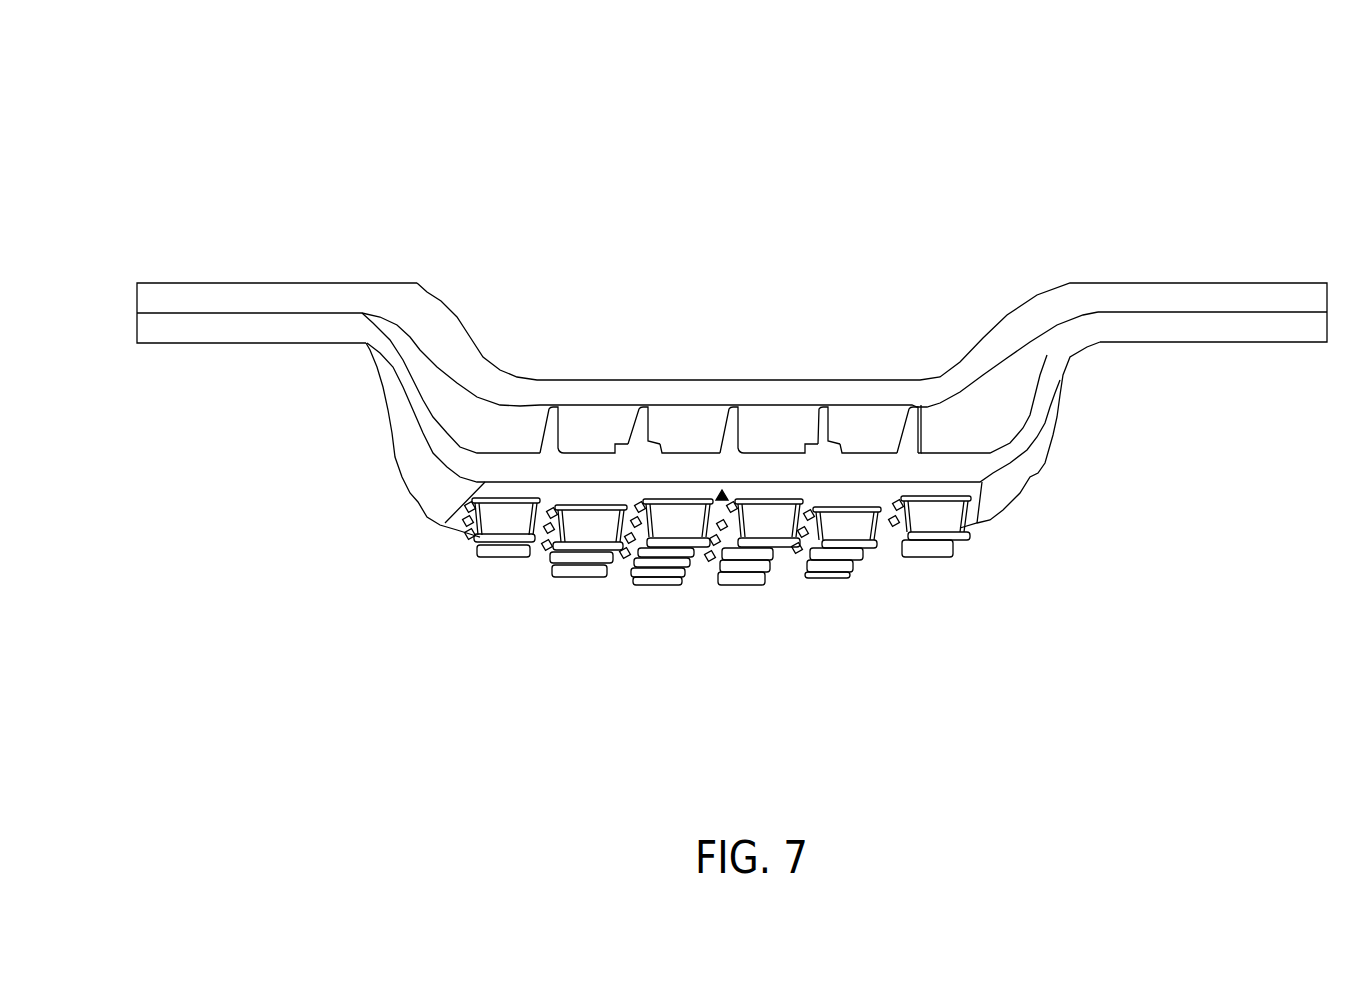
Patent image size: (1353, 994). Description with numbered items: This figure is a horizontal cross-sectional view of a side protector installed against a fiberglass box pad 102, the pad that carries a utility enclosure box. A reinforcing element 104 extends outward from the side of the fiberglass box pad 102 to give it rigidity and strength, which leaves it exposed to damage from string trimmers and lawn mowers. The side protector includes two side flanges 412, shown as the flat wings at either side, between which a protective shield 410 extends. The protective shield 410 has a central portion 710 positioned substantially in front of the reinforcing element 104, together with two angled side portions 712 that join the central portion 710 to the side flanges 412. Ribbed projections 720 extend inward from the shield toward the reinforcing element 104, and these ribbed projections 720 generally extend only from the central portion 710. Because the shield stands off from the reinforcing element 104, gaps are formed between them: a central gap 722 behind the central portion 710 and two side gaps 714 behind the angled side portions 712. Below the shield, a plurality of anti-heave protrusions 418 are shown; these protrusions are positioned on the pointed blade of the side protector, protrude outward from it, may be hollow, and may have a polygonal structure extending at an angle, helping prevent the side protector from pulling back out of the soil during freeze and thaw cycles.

The fiberglass box pad 102 is at (369, 280).
The reinforcing element 104 is at (938, 378).
The side flanges 412 is at (280, 327).
The side gaps 714 is at (512, 423).
The central gap 722 is at (673, 422).
The ribbed projections 720 is at (745, 427).
The angled side portions 712 is at (455, 487).
The central portion 710 is at (580, 488).
The protective shield 410 is at (712, 565).
The anti-heave protrusions 418 is at (815, 575).